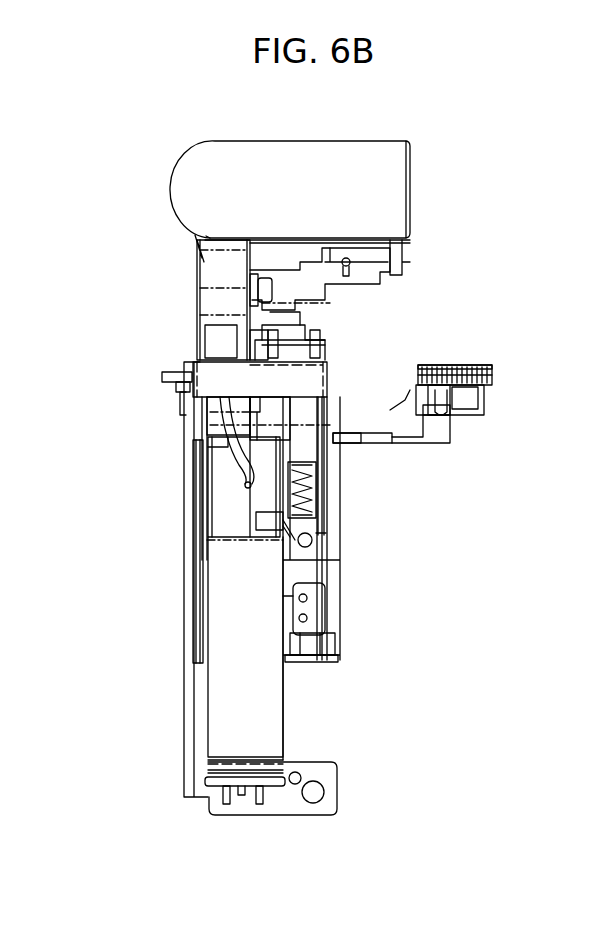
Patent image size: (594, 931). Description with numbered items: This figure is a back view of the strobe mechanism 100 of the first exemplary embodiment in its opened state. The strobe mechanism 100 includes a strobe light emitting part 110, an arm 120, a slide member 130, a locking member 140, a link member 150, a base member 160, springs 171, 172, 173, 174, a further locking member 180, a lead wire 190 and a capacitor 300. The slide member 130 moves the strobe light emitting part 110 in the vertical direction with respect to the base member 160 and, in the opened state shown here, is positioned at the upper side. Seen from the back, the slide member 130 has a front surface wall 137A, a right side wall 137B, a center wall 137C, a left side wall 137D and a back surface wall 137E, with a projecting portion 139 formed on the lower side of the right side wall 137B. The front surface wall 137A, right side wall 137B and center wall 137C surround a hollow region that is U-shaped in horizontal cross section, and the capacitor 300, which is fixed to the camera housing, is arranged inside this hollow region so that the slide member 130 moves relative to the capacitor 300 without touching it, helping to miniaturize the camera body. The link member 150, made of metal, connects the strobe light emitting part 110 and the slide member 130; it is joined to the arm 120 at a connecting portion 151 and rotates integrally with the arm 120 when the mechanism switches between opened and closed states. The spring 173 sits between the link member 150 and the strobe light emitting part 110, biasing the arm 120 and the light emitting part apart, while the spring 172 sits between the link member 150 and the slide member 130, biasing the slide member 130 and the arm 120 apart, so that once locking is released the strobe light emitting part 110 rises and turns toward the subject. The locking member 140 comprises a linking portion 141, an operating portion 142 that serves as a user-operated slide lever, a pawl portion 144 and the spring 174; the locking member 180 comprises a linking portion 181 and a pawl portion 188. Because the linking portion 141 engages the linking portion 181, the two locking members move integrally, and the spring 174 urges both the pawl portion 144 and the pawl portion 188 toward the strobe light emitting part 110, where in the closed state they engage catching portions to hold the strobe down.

The strobe mechanism 100 is at (150, 187).
The strobe light emitting part 110 is at (293, 260).
The arm 120 is at (213, 268).
The slide member 130 is at (449, 475).
The front surface wall 137A is at (283, 527).
The right side wall 137B is at (265, 520).
The center wall 137C is at (325, 498).
The left side wall 137D is at (290, 495).
The back surface wall 137E is at (270, 382).
The projecting portion 139 is at (328, 628).
The locking member 140 is at (462, 366).
The linking portion 141 is at (455, 390).
The operating portion 142 is at (463, 367).
The pawl portion 144 is at (390, 410).
The link member 150 is at (350, 294).
The connecting portion 151 is at (263, 288).
The base member 160 is at (300, 575).
The spring 171 is at (238, 489).
The spring 172 is at (296, 350).
The spring 173 is at (348, 268).
The spring 174 is at (477, 397).
The locking member 180 is at (438, 445).
The linking portion 181 is at (447, 403).
The pawl portion 188 is at (345, 432).
The lead wire 190 is at (225, 446).
The capacitor 300 is at (233, 627).